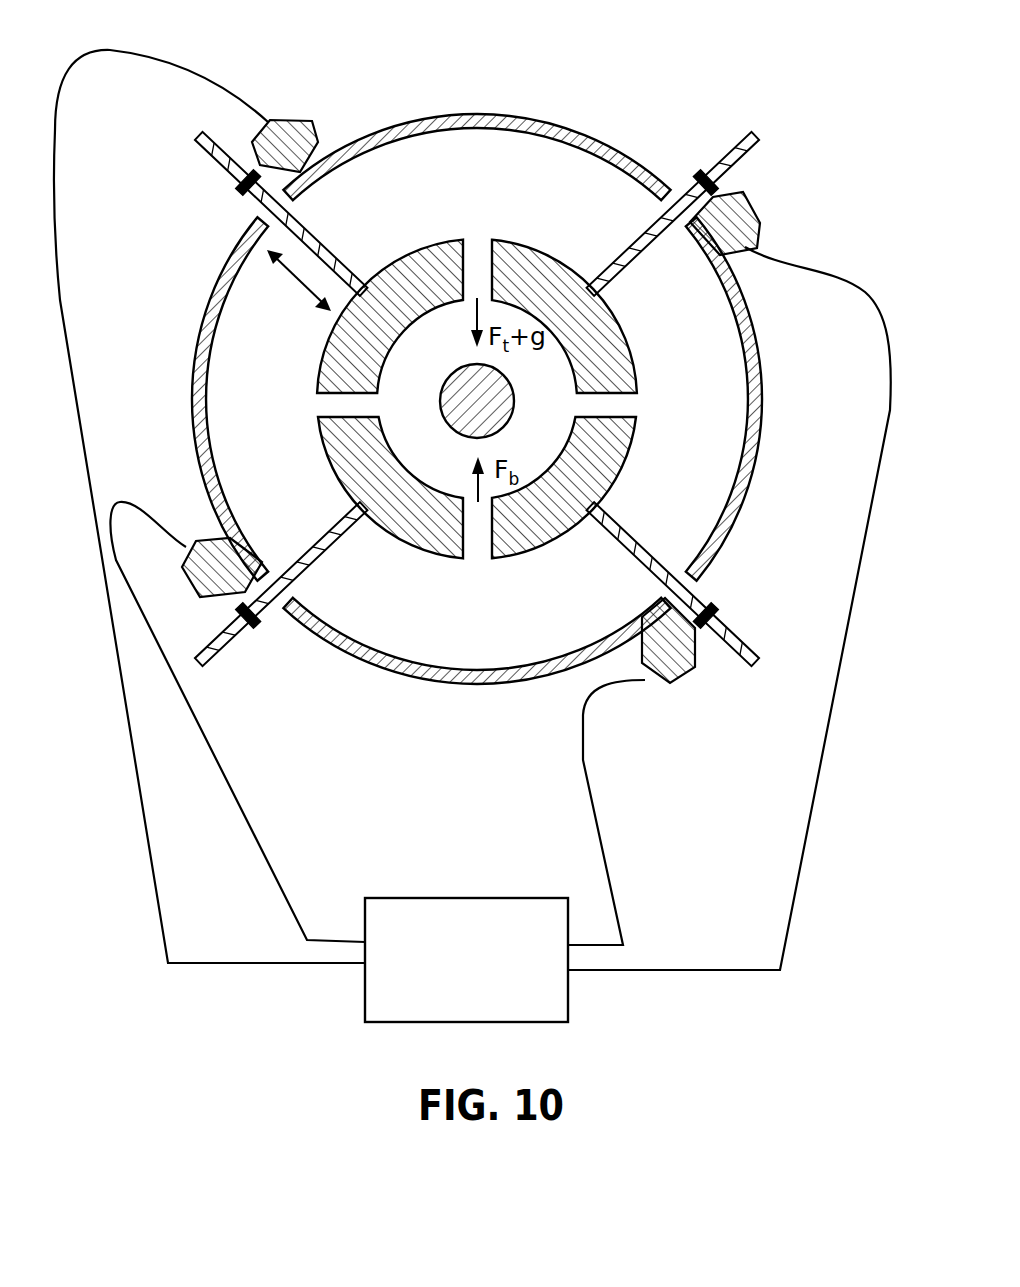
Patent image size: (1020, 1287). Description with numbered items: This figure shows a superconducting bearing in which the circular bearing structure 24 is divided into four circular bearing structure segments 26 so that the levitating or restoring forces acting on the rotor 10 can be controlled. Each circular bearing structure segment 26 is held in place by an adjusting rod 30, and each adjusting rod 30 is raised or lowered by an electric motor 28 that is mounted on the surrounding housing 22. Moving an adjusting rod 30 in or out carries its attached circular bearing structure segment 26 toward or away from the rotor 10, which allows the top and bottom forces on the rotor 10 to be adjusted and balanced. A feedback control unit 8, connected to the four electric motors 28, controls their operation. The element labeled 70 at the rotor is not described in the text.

The feedback control unit 8 is at (365, 997).
The rotor 10 is at (515, 401).
The housing 22 is at (540, 121).
The circular bearing structure 24 is at (499, 580).
The circular bearing structure segment 26 is at (400, 262).
The electric motor 28 is at (290, 120).
The adjusting rod 30 is at (215, 162).
The rotor 70 is at (455, 404).